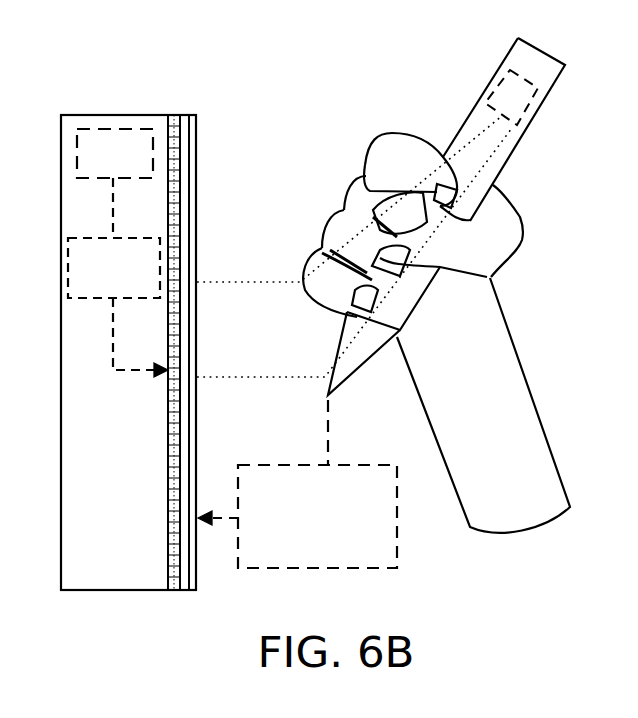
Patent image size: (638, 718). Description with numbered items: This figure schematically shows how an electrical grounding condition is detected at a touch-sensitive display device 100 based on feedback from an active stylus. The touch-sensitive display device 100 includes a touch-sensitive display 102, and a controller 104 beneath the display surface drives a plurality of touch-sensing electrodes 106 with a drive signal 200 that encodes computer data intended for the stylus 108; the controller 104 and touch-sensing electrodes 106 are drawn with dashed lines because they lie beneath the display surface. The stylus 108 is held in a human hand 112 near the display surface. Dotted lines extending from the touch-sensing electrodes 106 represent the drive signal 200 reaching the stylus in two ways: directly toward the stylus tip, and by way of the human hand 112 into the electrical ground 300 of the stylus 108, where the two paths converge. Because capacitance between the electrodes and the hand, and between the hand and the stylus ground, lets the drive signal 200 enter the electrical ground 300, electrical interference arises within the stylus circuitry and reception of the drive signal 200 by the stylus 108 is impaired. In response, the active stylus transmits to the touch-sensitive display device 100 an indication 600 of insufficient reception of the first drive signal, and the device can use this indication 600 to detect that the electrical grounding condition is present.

The touch-sensitive display device 100 is at (88, 114).
The touch-sensitive display 102 is at (197, 245).
The controller 104 is at (100, 164).
The touch-sensing electrodes 106 is at (176, 114).
The stylus 108 is at (543, 52).
The human hand 112 is at (522, 240).
The drive signal 200 is at (103, 299).
The electrical ground 300 is at (528, 116).
The indication of insufficient reception 600 is at (397, 547).